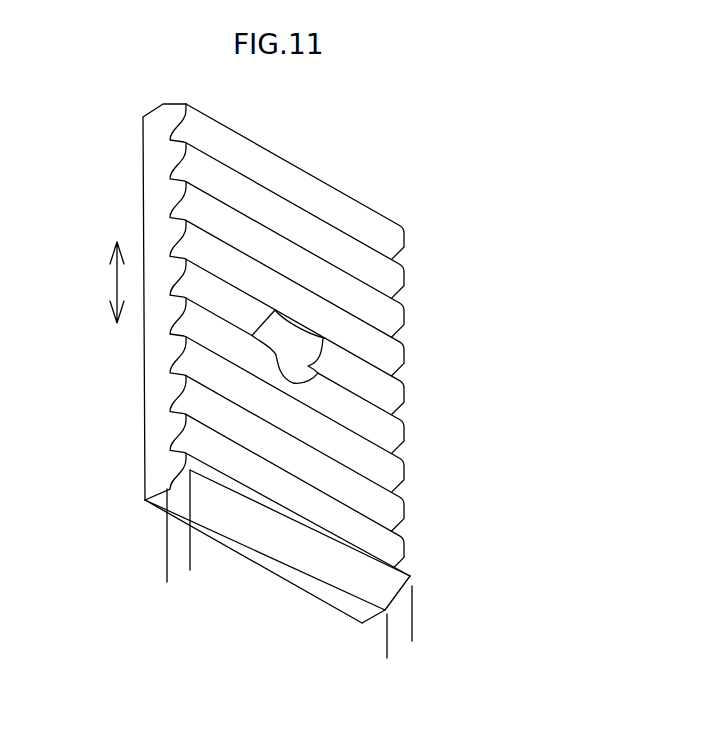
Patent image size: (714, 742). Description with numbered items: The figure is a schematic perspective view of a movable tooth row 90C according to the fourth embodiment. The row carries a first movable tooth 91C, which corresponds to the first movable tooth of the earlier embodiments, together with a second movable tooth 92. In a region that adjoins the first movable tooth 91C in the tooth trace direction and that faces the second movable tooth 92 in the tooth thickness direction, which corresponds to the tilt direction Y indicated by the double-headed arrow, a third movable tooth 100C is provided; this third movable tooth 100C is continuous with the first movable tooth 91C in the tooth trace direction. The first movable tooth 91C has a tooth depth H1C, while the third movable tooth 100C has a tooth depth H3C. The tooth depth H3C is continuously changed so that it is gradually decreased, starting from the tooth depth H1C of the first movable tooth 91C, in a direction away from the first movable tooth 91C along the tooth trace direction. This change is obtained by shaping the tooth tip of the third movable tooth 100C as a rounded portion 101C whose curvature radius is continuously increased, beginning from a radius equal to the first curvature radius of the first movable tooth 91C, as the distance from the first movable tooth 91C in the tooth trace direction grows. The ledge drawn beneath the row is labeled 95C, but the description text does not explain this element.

The movable tooth row 90C is at (328, 383).
The second movable tooth 92 is at (404, 310).
The base portion 95C is at (410, 574).
The third movable tooth 100C is at (230, 504).
The rounded portion 101C is at (268, 503).
The first movable tooth 91C is at (367, 576).
The tooth depth of the third movable tooth H3C is at (196, 553).
The tooth depth of the first movable tooth H1C is at (418, 623).
The tilt direction Y is at (117, 282).